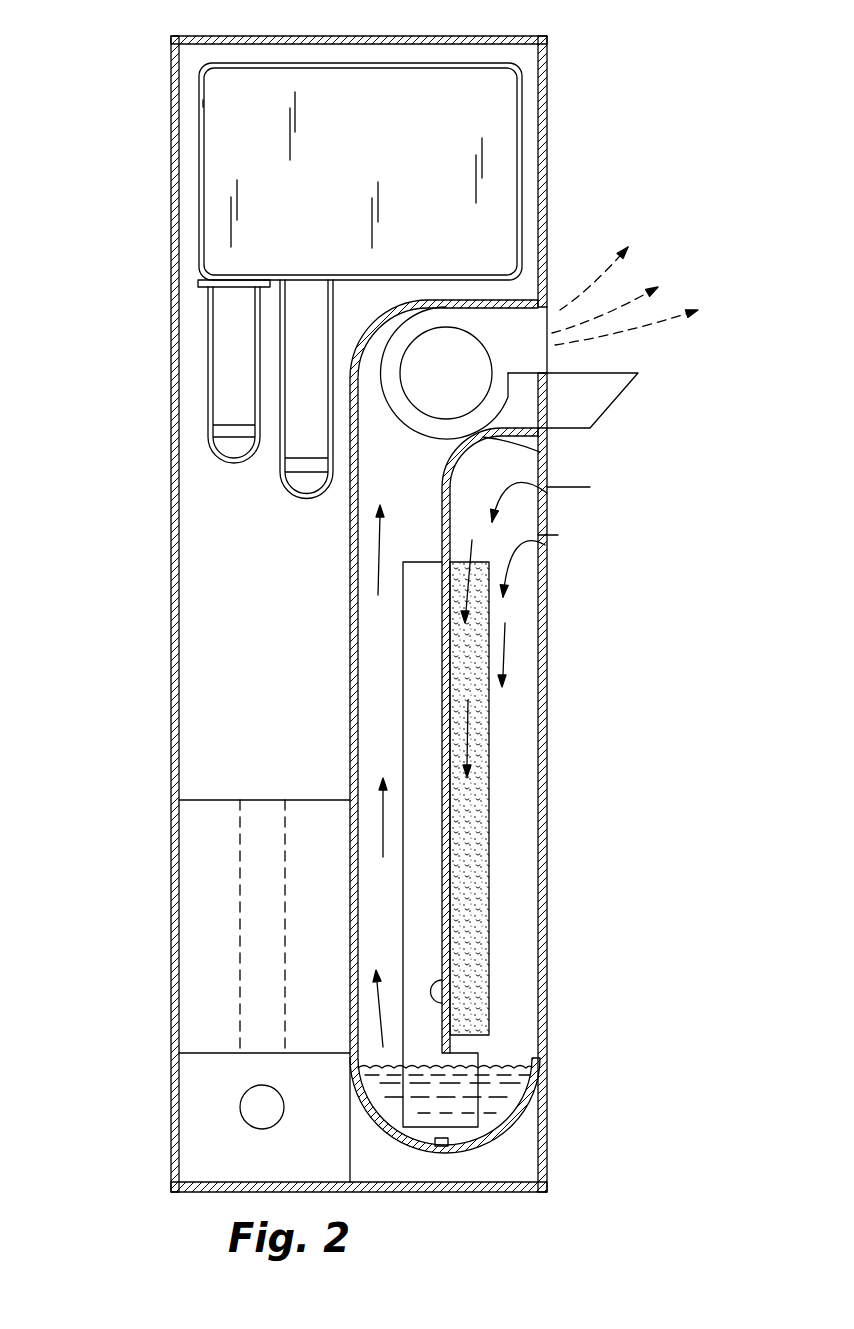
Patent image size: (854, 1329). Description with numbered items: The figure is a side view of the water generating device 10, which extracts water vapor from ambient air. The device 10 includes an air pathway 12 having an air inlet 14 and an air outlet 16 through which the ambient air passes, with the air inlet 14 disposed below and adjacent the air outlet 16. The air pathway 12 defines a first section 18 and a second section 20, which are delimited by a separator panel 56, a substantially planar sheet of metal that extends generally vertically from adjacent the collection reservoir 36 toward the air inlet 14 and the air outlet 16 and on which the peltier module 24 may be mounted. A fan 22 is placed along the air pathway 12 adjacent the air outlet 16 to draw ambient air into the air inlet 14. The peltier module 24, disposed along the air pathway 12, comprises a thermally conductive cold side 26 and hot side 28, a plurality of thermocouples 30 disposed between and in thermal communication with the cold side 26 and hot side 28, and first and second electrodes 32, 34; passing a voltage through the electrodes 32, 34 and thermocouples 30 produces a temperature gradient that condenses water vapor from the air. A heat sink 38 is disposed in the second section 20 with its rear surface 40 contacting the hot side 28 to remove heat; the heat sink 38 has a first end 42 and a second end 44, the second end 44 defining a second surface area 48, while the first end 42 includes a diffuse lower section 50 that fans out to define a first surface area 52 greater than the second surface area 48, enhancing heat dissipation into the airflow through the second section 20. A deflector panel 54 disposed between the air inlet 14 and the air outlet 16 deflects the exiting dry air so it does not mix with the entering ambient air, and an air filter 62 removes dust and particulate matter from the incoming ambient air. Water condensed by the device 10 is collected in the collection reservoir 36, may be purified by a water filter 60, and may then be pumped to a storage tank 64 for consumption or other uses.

The water generating device 10 is at (593, 55).
The air pathway 12 is at (375, 925).
The air inlet 14 is at (547, 493).
The air outlet 16 is at (540, 357).
The first section 18 is at (515, 830).
The second section 20 is at (375, 880).
The fan 22 is at (461, 399).
The peltier module 24 is at (490, 760).
The cold side 26 is at (483, 970).
The hot side 28 is at (483, 1010).
The thermocouples 30 is at (583, 730).
The first electrode 32 is at (448, 576).
The second electrode 34 is at (443, 562).
The collection reservoir 36 is at (505, 1092).
The heat sink 38 is at (415, 762).
The rear surface 40 is at (443, 645).
The first end 42 is at (422, 1030).
The second end 44 is at (413, 615).
The second surface area 48 is at (415, 632).
The diffuse lower section 50 is at (428, 1108).
The first surface area 52 is at (453, 1108).
The deflector panel 54 is at (605, 395).
The separator panel 56 is at (547, 450).
The water filter 60 is at (297, 322).
The air filter 62 is at (222, 377).
The storage tank 64 is at (368, 164).